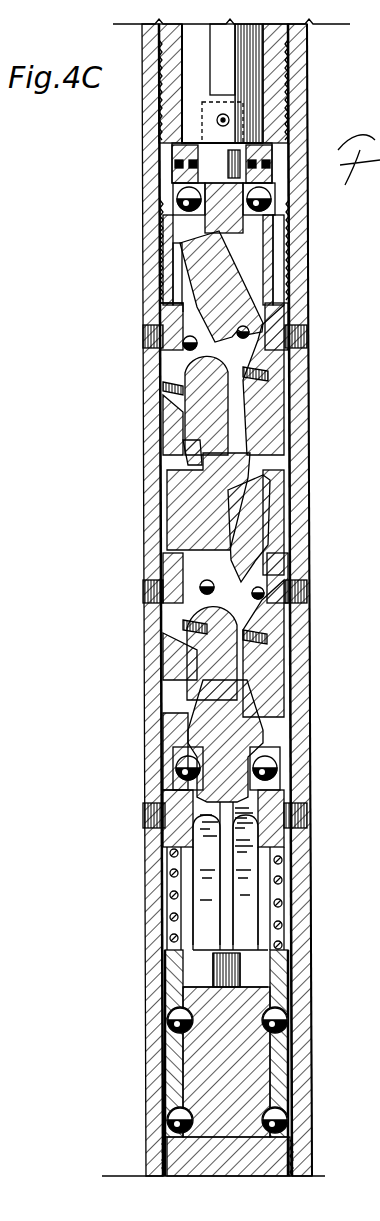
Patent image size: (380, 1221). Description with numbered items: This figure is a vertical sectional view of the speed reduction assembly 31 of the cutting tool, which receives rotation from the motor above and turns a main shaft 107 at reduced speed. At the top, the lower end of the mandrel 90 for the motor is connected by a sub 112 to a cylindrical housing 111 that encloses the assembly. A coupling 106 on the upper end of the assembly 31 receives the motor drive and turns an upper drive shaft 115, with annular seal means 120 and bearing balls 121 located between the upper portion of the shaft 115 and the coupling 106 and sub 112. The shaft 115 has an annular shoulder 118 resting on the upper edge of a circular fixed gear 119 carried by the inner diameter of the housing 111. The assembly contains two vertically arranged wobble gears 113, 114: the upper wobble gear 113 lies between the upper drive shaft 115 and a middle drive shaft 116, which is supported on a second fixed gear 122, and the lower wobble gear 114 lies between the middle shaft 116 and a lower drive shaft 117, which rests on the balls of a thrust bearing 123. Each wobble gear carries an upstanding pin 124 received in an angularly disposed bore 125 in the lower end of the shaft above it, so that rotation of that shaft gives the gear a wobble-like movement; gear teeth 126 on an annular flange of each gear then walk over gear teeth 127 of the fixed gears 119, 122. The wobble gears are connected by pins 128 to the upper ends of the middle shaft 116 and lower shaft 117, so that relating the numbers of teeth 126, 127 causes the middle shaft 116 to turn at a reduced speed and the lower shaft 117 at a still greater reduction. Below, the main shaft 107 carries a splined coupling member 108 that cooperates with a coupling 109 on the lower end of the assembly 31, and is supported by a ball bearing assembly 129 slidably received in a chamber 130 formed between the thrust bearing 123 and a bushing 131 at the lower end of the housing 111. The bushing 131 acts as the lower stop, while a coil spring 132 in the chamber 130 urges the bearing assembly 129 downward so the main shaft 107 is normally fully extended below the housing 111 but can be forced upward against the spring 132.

The speed reduction assembly 31 is at (143, 672).
The mandrel 90 is at (300, 68).
The coupling 106 is at (252, 52).
The main shaft 107 is at (253, 1070).
The splined coupling member 108 is at (260, 963).
The coupling 109 is at (260, 868).
The cylindrical housing 111 is at (297, 400).
The sub 112 is at (175, 172).
The wobble gear 113 is at (185, 283).
The wobble gear 114 is at (262, 545).
The upper drive shaft 115 is at (258, 250).
The middle drive shaft 116 is at (185, 493).
The lower drive shaft 117 is at (205, 713).
The annular shoulder 118 is at (289, 311).
The fixed gear 119 is at (184, 344).
The annular seal means 120 is at (177, 148).
The bearing balls 121 is at (176, 195).
The fixed gear 122 is at (168, 575).
The thrust bearing 123 is at (178, 772).
The upstanding pin 124 is at (178, 262).
The bore 125 is at (176, 226).
The gear teeth 126 is at (183, 386).
The gear teeth 127 is at (186, 367).
The pins 128 is at (176, 410).
The ball bearing assembly 129 is at (162, 1062).
The chamber 130 is at (276, 893).
The bushing 131 is at (166, 1158).
The coil spring 132 is at (175, 870).